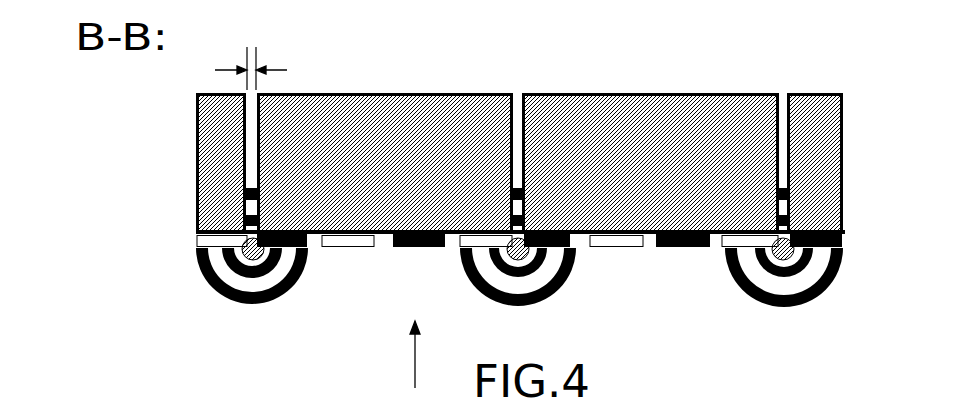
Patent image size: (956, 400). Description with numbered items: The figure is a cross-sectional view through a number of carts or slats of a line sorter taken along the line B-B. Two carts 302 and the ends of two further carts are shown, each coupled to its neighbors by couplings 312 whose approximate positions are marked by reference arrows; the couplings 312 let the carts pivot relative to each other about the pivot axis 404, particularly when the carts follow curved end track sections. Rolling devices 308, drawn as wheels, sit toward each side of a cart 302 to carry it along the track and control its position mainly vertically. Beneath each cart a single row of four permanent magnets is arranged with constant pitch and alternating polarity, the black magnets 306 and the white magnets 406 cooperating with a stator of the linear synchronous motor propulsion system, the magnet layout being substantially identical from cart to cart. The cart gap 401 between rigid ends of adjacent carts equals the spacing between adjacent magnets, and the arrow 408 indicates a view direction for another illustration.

The cart 302 is at (368, 292).
The permanent magnet 306 is at (285, 247).
The rolling device 308 is at (235, 308).
The coupling 312 is at (446, 253).
The cart gap 401 is at (252, 47).
The pivot axis 404 is at (258, 240).
The permanent magnet 406 is at (720, 247).
The view direction arrow 408 is at (415, 352).